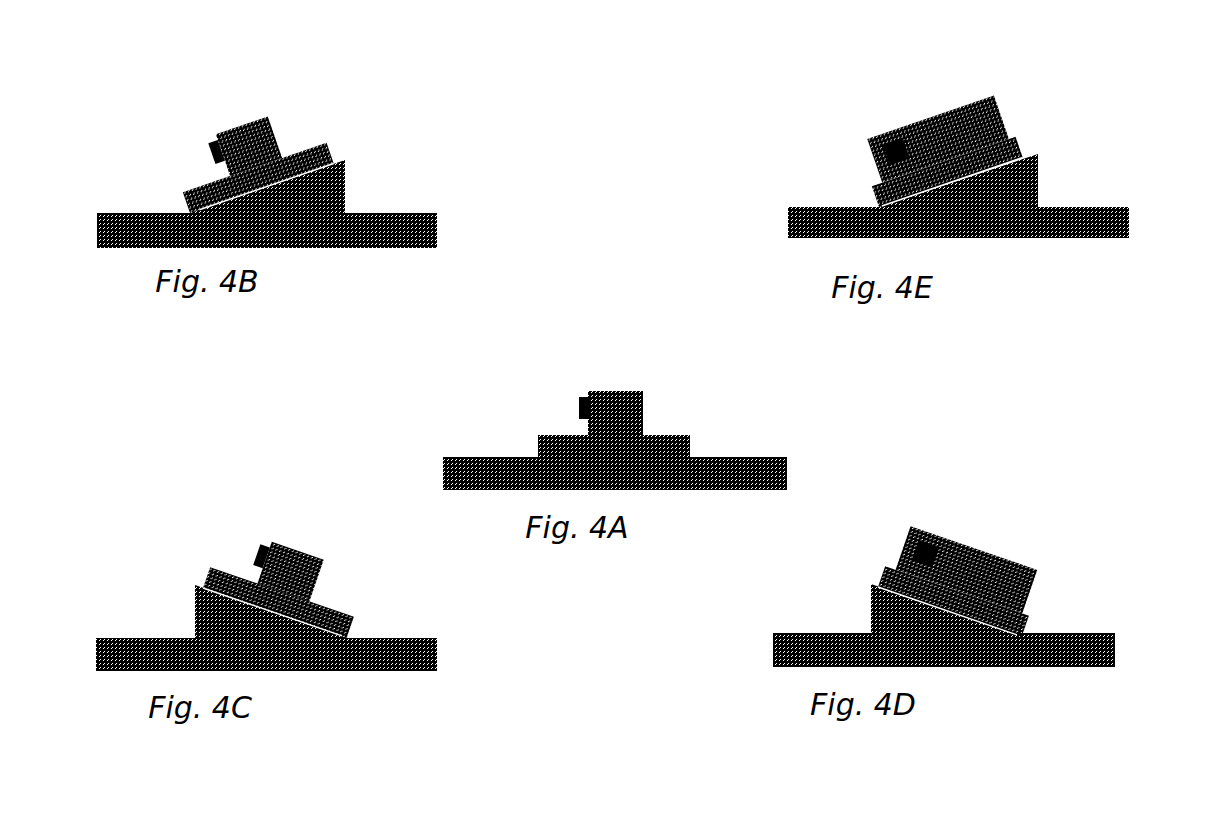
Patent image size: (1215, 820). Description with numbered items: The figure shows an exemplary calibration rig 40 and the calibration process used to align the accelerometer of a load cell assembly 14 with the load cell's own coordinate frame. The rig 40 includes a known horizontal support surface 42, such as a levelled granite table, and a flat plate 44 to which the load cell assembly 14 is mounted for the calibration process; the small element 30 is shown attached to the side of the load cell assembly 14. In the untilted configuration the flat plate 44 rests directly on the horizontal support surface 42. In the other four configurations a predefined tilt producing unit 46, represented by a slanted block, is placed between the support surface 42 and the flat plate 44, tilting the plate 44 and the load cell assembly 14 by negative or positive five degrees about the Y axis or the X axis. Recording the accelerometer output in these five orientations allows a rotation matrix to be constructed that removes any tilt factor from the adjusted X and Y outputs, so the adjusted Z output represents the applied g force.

In FIG. 4A, the load cell assembly 14 is at (623, 404).
In FIG. 4B, the load cell assembly 14 is at (269, 111).
In FIG. 4C, the load cell assembly 14 is at (327, 557).
In FIG. 4D, the load cell assembly 14 is at (985, 537).
In FIG. 4E, the load cell assembly 14 is at (973, 94).
In FIG. 4A, the sensor 30 is at (572, 402).
In FIG. 4B, the sensor 30 is at (214, 147).
In FIG. 4A, the rig 40 is at (579, 430).
In FIG. 4A, the horizontal support surface 42 is at (726, 484).
In FIG. 4B, the horizontal support surface 42 is at (421, 232).
In FIG. 4C, the horizontal support surface 42 is at (326, 660).
In FIG. 4D, the horizontal support surface 42 is at (973, 659).
In FIG. 4E, the horizontal support surface 42 is at (1094, 229).
In FIG. 4A, the flat plate 44 is at (699, 431).
In FIG. 4B, the flat plate 44 is at (199, 193).
In FIG. 4C, the flat plate 44 is at (344, 625).
In FIG. 4D, the flat plate 44 is at (1017, 619).
In FIG. 4E, the flat plate 44 is at (1014, 144).
In FIG. 4B, the tilt producing unit 46 is at (328, 199).
In FIG. 4C, the tilt producing unit 46 is at (212, 616).
In FIG. 4D, the tilt producing unit 46 is at (1021, 556).
In FIG. 4E, the tilt producing unit 46 is at (1021, 189).